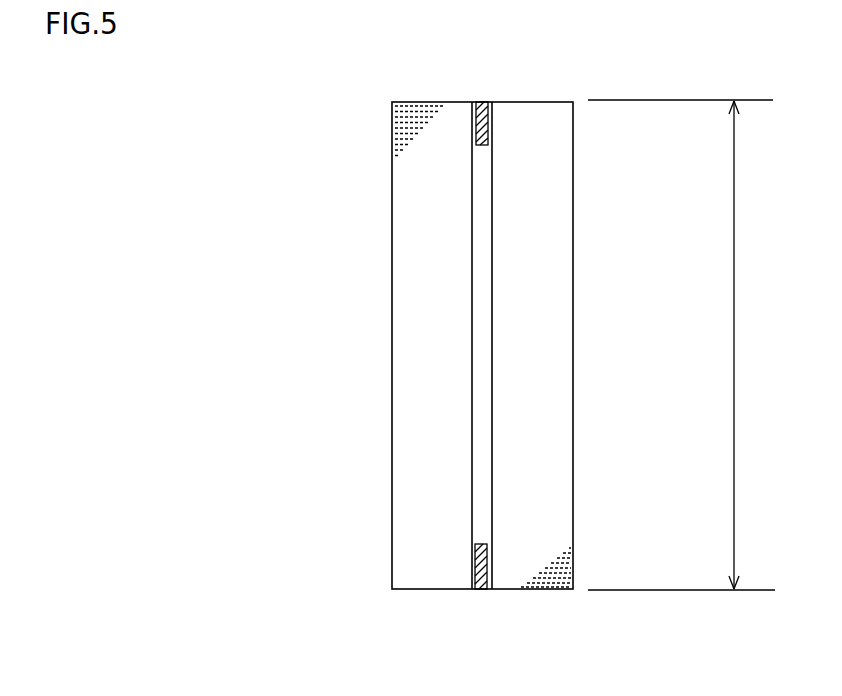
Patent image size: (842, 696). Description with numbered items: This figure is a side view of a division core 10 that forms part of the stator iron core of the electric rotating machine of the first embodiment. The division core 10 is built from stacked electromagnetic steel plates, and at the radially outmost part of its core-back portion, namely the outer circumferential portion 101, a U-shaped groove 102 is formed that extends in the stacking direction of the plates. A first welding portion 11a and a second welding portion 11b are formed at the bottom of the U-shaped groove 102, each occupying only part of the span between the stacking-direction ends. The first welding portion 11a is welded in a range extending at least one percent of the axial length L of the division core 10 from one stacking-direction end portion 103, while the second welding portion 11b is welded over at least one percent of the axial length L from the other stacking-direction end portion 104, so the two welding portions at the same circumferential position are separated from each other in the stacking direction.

The division core 10 is at (560, 195).
The outer circumferential portion 101 is at (425, 358).
The U-shaped groove 102 is at (478, 297).
The one stacking-direction end portion 103 is at (435, 101).
The other stacking-direction end portion 104 is at (507, 590).
The first welding portion 11a is at (473, 137).
The second welding portion 11b is at (473, 570).
The axial length L is at (734, 415).